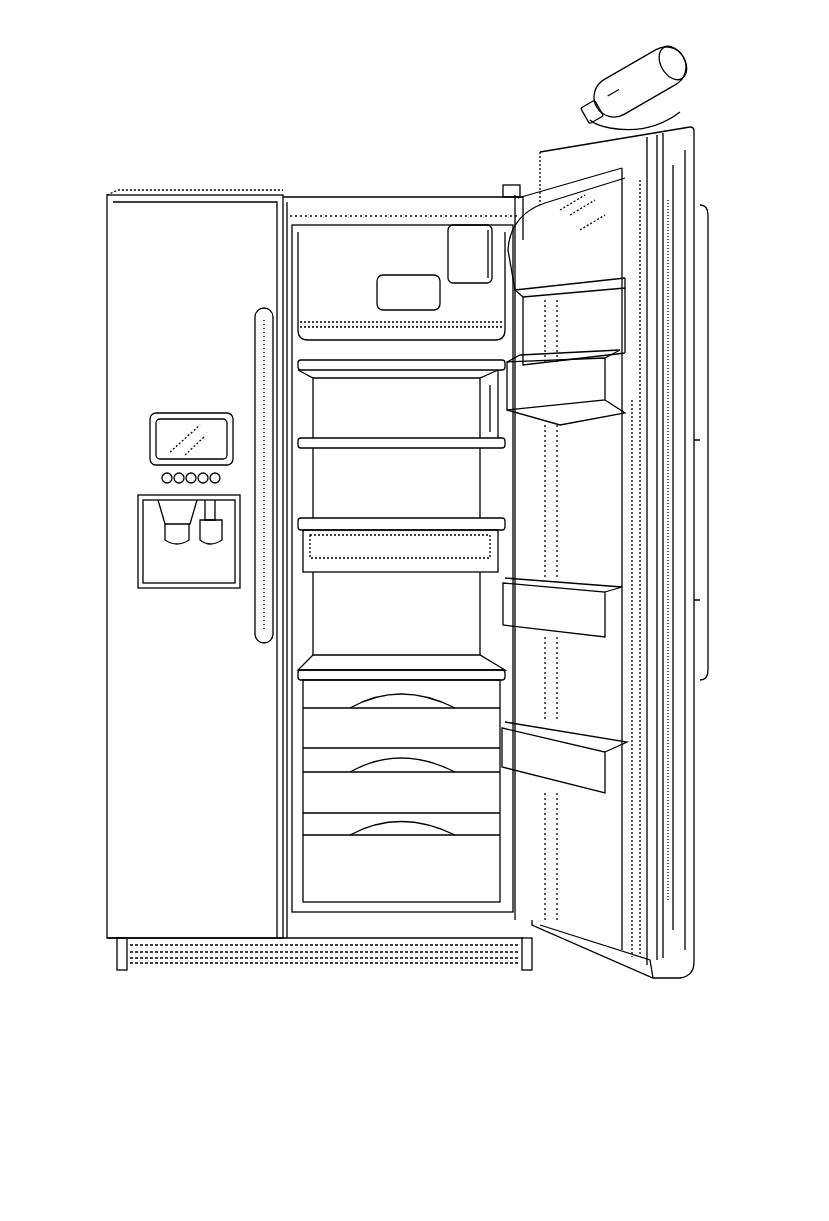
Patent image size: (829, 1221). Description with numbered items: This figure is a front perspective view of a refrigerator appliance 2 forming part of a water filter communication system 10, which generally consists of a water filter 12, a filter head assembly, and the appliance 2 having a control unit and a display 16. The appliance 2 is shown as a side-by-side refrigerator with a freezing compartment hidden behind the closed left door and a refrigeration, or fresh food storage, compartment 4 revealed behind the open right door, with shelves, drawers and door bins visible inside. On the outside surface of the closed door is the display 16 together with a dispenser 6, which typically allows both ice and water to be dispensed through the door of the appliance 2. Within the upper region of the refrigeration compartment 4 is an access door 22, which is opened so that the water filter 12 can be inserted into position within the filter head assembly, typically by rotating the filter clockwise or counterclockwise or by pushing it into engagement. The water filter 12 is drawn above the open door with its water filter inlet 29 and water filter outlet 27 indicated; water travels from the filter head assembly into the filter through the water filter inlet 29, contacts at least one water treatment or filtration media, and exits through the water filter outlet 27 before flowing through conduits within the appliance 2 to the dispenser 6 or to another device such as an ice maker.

The water filter communication system 10 is at (485, 95).
The appliance 2 is at (104, 617).
The refrigeration compartment 4 is at (432, 610).
The dispenser 6 is at (136, 540).
The display 16 is at (148, 437).
The access door 22 is at (468, 232).
The water filter 12 is at (615, 80).
The water filter outlet 27 is at (583, 115).
The water filter inlet 29 is at (680, 112).